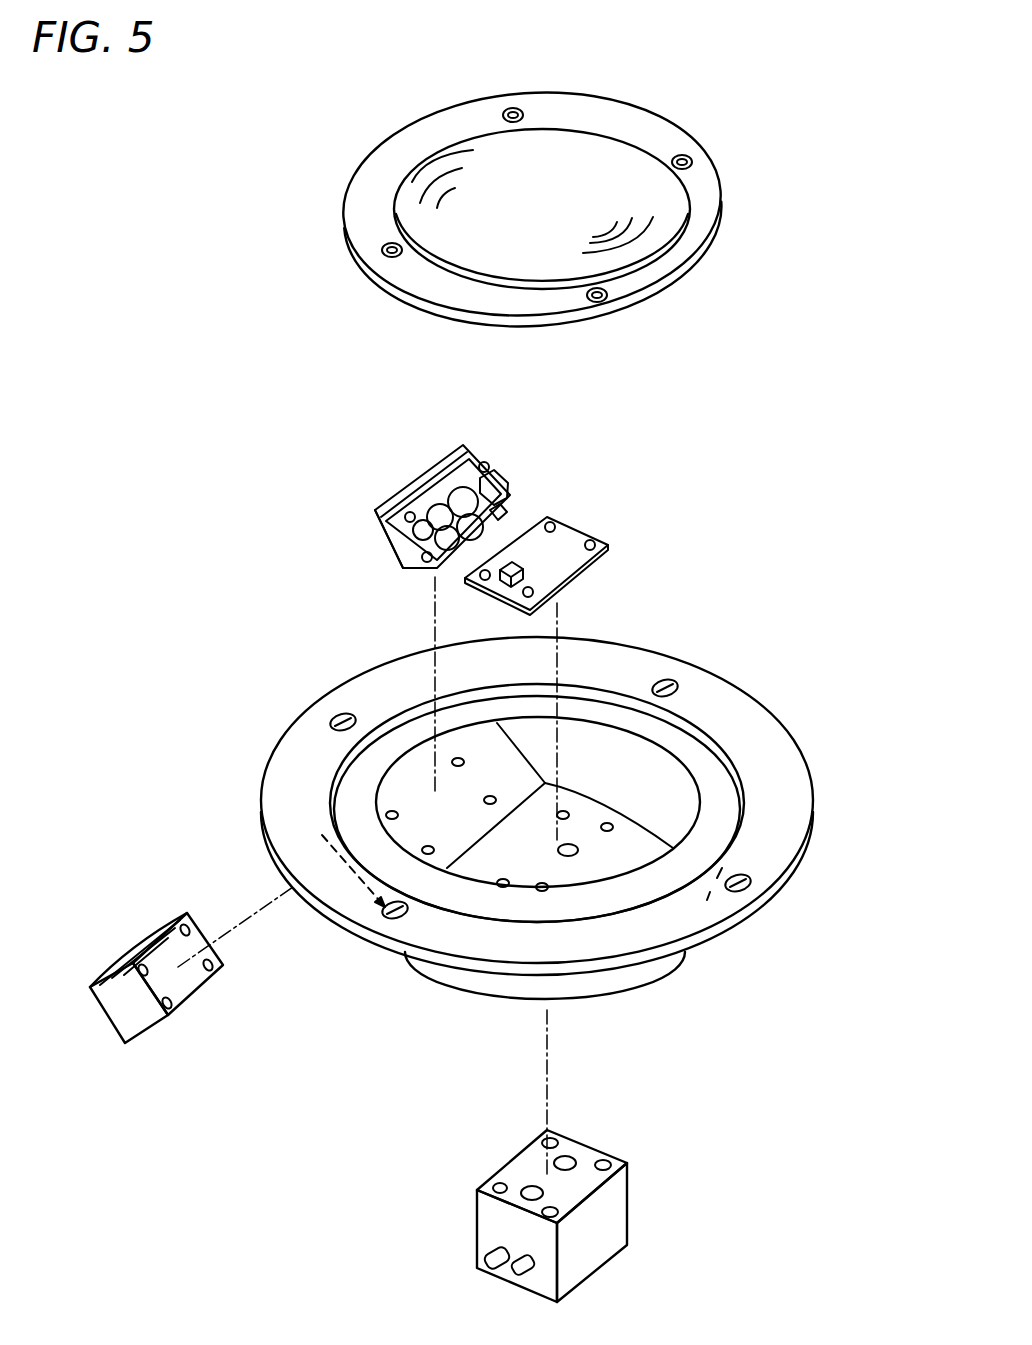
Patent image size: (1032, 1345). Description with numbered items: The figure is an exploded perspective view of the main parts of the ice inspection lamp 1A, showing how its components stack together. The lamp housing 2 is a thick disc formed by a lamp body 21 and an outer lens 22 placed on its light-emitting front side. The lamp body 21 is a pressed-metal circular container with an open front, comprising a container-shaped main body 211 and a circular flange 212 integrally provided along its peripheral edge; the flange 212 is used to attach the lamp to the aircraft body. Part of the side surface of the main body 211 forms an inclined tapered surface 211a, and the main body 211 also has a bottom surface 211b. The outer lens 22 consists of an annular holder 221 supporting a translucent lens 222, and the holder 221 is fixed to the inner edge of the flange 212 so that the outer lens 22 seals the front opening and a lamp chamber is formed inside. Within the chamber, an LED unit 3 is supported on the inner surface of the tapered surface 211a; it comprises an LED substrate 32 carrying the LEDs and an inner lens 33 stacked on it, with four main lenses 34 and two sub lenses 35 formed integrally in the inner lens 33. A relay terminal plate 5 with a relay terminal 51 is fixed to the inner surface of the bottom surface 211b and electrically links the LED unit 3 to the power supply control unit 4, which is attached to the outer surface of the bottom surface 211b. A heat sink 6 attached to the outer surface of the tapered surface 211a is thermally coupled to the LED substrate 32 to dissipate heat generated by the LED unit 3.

The ice inspection lamp 1A is at (770, 440).
The lamp housing 2 is at (268, 698).
The lamp body 21 is at (797, 737).
The main body 211 is at (613, 730).
The tapered surface 211a is at (400, 773).
The bottom surface 211b is at (614, 866).
The flange 212 is at (768, 873).
The outer lens 22 is at (717, 180).
The holder 221 is at (627, 290).
The lens 222 is at (427, 188).
The LED unit 3 is at (430, 455).
The LED substrate 32 is at (402, 492).
The inner lens 33 is at (495, 467).
The main lens 34 is at (442, 562).
The sub lens 35 is at (413, 538).
The relay terminal plate 5 is at (597, 524).
The relay terminal 51 is at (568, 580).
The heat sink 6 is at (183, 1005).
The power supply control unit 4 is at (642, 1207).